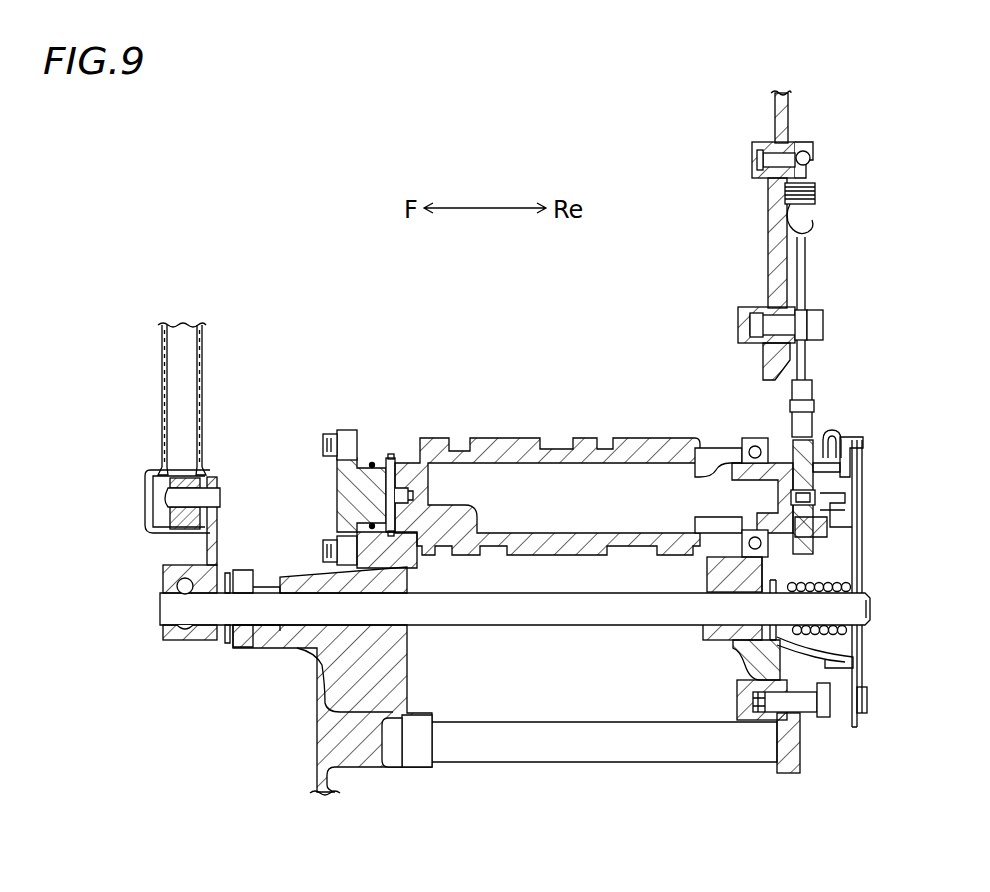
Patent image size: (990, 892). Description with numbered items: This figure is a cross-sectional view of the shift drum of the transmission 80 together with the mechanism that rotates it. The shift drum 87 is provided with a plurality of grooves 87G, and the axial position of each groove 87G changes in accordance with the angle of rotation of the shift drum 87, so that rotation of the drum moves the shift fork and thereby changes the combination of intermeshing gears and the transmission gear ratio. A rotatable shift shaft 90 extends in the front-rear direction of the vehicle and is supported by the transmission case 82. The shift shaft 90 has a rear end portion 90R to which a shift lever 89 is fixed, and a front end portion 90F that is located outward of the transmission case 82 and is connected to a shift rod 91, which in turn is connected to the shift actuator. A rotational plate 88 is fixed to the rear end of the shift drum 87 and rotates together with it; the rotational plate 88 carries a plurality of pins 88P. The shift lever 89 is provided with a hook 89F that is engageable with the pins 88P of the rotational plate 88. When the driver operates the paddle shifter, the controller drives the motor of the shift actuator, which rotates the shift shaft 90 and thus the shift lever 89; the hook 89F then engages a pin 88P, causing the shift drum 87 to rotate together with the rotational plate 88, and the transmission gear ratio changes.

The transmission 80 is at (295, 458).
The transmission case 82 is at (315, 747).
The shift drum 87 is at (407, 458).
The groove 87G is at (584, 438).
The rotational plate 88 is at (803, 560).
The pin 88P is at (833, 468).
The shift lever 89 is at (867, 563).
The hook 89F is at (827, 437).
The shift shaft 90 is at (323, 610).
The front end portion 90F is at (172, 608).
The rear end portion 90R is at (860, 610).
The shift rod 91 is at (165, 395).